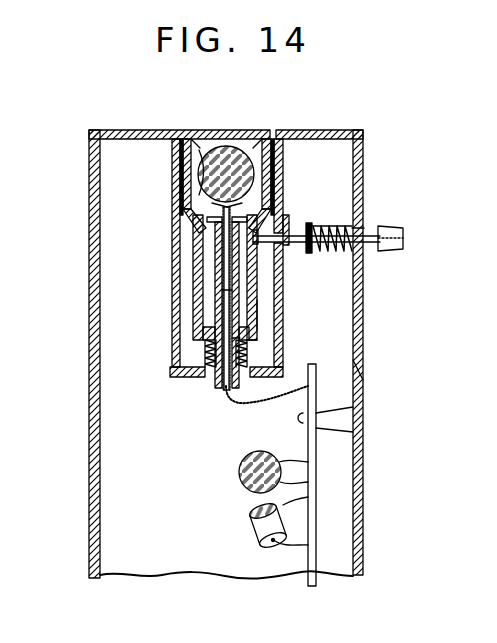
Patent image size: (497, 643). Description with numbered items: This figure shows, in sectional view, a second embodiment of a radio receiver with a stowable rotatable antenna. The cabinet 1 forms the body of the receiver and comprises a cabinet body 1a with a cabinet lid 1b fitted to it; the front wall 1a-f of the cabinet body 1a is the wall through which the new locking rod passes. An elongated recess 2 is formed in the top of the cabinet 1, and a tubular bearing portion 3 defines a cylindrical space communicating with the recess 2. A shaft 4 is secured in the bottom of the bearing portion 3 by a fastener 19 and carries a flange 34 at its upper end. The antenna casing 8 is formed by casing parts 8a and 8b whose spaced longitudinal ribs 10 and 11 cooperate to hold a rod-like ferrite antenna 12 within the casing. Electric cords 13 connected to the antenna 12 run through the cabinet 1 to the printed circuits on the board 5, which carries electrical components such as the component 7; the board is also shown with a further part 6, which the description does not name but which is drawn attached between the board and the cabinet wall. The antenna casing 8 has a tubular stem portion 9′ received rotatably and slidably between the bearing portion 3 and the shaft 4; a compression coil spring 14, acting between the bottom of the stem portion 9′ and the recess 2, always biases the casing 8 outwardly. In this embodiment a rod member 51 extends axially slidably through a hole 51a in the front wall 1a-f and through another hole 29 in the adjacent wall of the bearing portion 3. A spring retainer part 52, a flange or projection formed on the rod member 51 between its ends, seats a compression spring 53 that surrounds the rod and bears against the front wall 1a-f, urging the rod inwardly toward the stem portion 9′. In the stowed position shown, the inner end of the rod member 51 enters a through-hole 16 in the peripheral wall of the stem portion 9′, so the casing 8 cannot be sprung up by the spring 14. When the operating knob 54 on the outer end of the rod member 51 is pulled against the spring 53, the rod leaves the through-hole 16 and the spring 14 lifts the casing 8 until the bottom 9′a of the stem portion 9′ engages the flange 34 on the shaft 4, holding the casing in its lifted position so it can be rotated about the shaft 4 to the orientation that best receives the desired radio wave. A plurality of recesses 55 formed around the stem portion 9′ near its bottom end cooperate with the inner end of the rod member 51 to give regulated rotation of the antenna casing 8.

The cabinet 1 is at (179, 572).
The cabinet body 1a is at (358, 300).
The front wall 1a-f is at (358, 370).
The cabinet lid 1b is at (90, 368).
The elongated recess 2 is at (172, 228).
The tubular bearing portion 3 is at (193, 317).
The shaft 4 is at (207, 274).
The board 5 is at (316, 525).
The arm 6 is at (340, 420).
The electrical component 7 is at (250, 512).
The antenna casing 8 is at (272, 135).
The casing part 8a is at (284, 224).
The casing part 8b is at (247, 140).
The stem portion 9′ is at (222, 297).
The bottom of the stem portion 9′a is at (240, 338).
The longitudinal ribs 10 is at (183, 205).
The longitudinal ribs 11 is at (214, 140).
The ferrite antenna 12 is at (177, 170).
The electric cords 13 is at (270, 396).
The compression coil spring 14 is at (205, 350).
The through-hole 16 is at (258, 317).
The fastener 19 is at (216, 389).
The hole 29 is at (340, 252).
The flange 34 is at (183, 243).
The rod member 51 is at (368, 249).
The hole 51a is at (366, 228).
The spring retainer part 52 is at (342, 256).
The compression spring 53 is at (340, 222).
The operating knob 54 is at (392, 227).
The recesses 55 is at (260, 345).